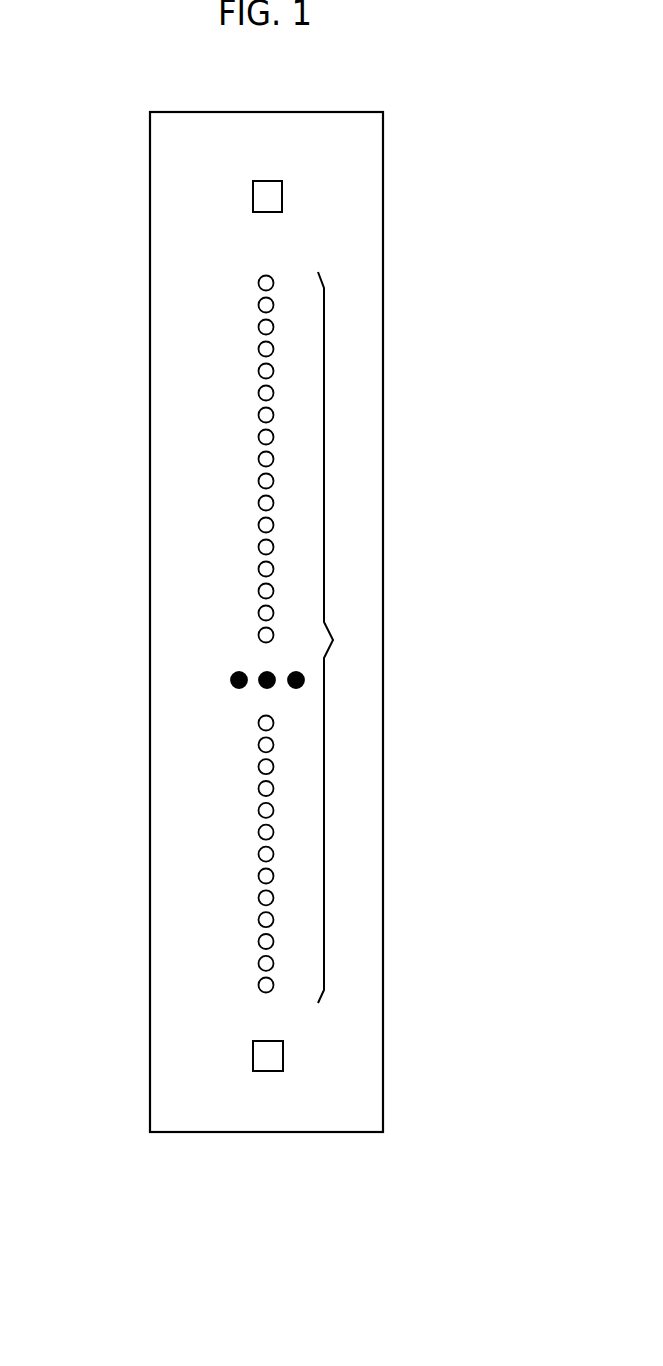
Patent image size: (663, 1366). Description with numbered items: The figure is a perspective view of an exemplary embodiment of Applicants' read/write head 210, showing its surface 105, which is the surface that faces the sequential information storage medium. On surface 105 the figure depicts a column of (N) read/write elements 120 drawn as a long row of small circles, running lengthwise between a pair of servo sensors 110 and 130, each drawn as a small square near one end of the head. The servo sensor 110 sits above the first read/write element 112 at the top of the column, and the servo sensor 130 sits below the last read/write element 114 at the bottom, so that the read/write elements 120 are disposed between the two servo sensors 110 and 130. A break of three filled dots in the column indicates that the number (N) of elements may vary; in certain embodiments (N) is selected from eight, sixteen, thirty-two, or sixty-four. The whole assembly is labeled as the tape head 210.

The surface 105 is at (282, 1114).
The servo sensor 110 is at (268, 191).
The first read/write head 112 is at (273, 283).
The last read/write head 114 is at (265, 985).
The read/write elements 120 is at (295, 611).
The servo sensor 130 is at (275, 1058).
The read/write head 210 is at (301, 711).